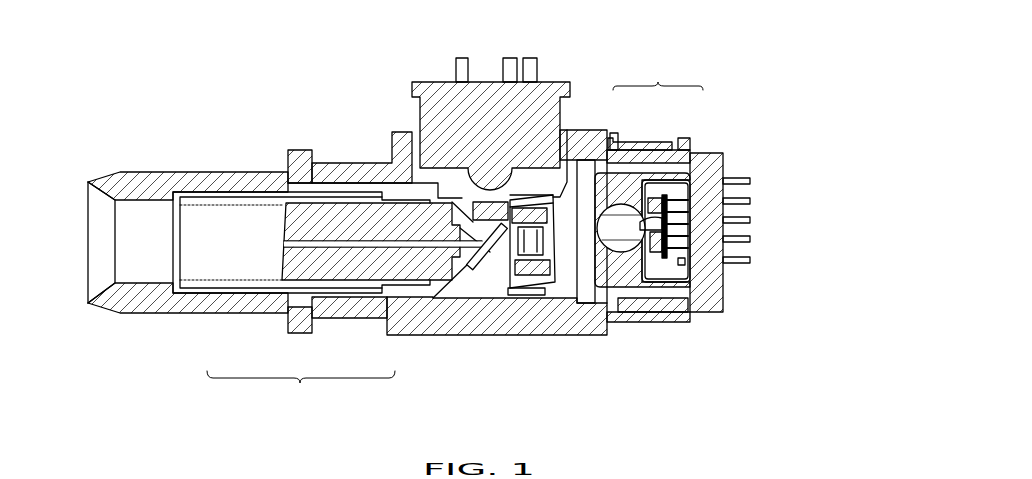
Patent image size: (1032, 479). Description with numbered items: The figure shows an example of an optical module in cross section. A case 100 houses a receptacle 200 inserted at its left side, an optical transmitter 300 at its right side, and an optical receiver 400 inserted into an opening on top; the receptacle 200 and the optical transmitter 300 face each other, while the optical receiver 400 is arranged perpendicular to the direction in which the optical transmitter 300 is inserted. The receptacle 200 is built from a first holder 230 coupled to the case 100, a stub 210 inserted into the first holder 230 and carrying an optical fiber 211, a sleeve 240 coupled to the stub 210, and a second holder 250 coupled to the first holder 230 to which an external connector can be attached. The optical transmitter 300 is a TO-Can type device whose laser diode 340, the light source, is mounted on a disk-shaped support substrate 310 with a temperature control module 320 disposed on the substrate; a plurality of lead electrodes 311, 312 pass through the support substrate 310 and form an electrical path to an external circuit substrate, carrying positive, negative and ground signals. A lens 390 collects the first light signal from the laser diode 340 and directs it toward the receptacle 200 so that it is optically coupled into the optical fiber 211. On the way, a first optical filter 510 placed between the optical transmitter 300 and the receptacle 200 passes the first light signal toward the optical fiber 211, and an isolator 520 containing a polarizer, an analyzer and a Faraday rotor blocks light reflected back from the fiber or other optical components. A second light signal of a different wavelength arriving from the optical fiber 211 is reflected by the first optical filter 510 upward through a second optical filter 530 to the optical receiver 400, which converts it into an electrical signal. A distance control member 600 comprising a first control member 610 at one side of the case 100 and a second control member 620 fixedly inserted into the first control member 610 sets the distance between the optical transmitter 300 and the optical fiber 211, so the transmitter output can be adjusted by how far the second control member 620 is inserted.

The case 100 is at (392, 150).
The receptacle 200 is at (301, 389).
The stub 210 is at (372, 282).
The optical fiber 211 is at (332, 285).
The first holder 230 is at (385, 302).
The sleeve 240 is at (260, 287).
The second holder 250 is at (215, 305).
The optical transmitter 300 is at (696, 284).
The support substrate 310 is at (717, 290).
The lead electrode 311 is at (750, 260).
The lead electrode 312 is at (750, 181).
The temperature control module 320 is at (670, 266).
The laser diode 340 is at (667, 203).
The lens 390 is at (592, 240).
The optical receiver 400 is at (420, 117).
The first optical filter 510 is at (488, 266).
The isolator 520 is at (528, 280).
The second optical filter 530 is at (490, 192).
The distance control member 600 is at (655, 191).
The first control member 610 is at (633, 138).
The second control member 620 is at (688, 138).